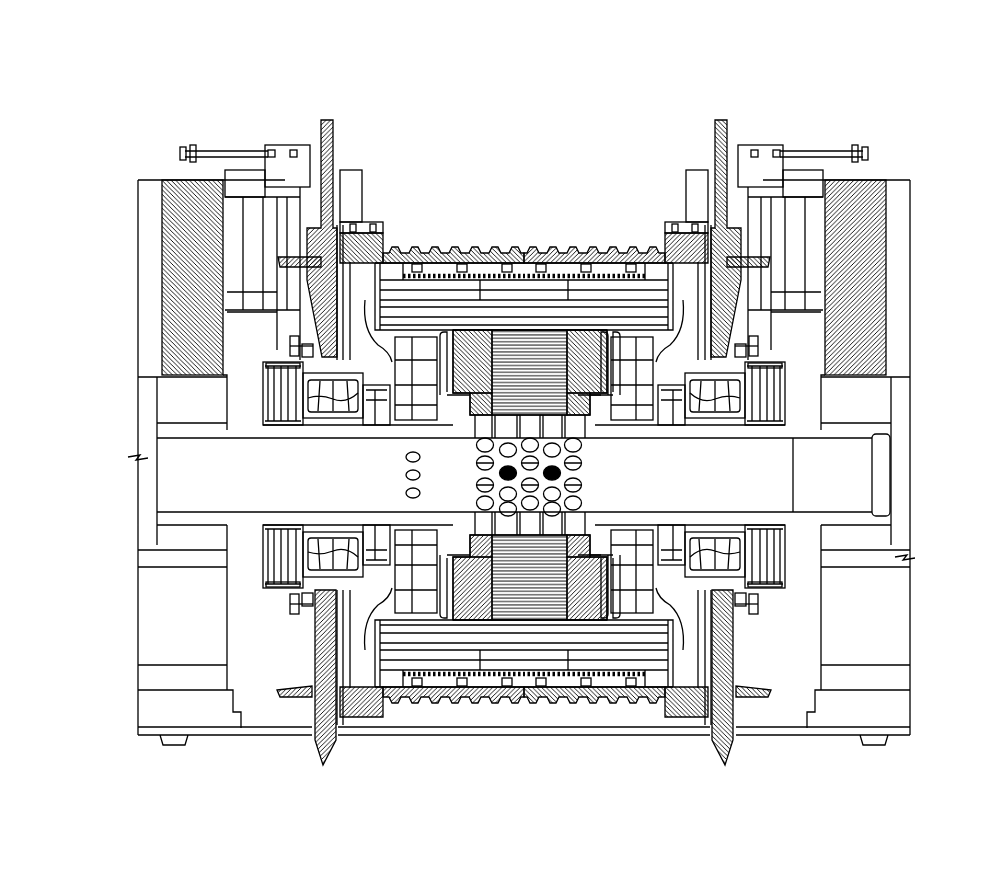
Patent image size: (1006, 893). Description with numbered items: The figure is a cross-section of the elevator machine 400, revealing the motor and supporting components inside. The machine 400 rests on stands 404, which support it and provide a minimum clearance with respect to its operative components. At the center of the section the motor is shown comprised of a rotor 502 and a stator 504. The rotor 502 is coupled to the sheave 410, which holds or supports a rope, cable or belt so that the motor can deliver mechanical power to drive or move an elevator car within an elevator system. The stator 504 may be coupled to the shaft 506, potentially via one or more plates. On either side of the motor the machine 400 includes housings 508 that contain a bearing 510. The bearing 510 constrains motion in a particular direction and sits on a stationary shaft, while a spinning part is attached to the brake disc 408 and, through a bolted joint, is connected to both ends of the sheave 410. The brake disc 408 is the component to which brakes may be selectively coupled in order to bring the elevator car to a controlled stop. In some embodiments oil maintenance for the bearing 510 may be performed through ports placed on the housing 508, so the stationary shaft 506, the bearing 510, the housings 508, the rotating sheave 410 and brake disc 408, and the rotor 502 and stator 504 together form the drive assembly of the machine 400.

The machine 400 is at (175, 103).
The stands 404 is at (186, 643).
The brake disc 408 is at (336, 119).
The sheave 410 is at (539, 246).
The rotor 502 is at (630, 686).
The stator 504 is at (512, 653).
The shaft 506 is at (709, 485).
The housings 508 is at (308, 353).
The bearing 510 is at (331, 406).